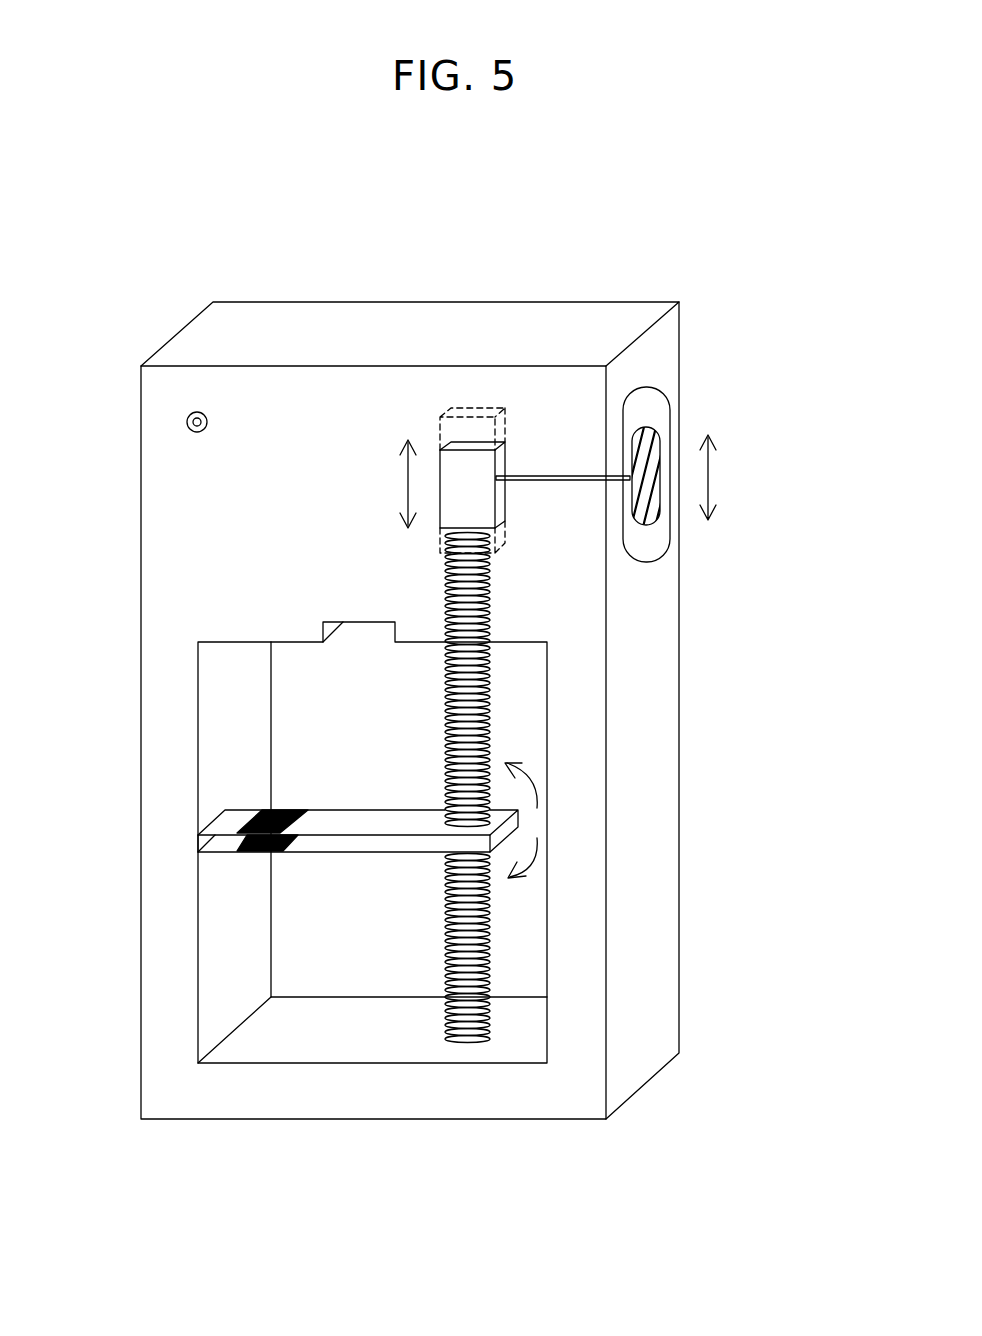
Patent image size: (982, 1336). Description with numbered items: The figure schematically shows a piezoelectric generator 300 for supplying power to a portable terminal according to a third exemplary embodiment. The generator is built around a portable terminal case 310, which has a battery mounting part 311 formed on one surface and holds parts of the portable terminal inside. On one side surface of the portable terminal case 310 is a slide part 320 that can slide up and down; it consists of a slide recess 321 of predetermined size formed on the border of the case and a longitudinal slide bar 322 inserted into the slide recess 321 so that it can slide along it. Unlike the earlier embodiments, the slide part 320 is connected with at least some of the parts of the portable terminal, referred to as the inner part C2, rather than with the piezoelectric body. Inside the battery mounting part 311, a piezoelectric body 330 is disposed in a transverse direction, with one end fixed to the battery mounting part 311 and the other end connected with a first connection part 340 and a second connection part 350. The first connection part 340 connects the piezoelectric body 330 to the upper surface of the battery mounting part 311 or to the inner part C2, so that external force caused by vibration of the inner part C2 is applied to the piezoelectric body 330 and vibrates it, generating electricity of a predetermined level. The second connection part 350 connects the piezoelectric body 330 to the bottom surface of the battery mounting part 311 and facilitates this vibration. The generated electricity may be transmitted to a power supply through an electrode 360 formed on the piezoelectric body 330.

The piezoelectric generator 300 is at (466, 204).
The portable terminal case 310 is at (227, 525).
The battery mounting part 311 is at (368, 930).
The slide part 320 is at (790, 292).
The slide recess 321 is at (646, 415).
The slide bar 322 is at (655, 428).
The piezoelectric body 330 is at (337, 842).
The first connection part 340 is at (480, 705).
The second connection part 350 is at (487, 957).
The electrode 360 is at (268, 810).
The inner part C2 is at (475, 468).